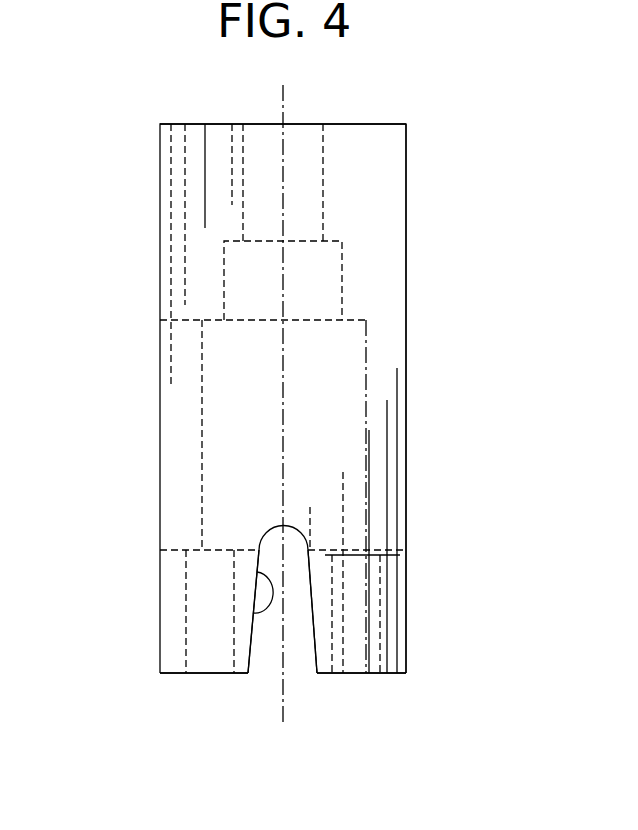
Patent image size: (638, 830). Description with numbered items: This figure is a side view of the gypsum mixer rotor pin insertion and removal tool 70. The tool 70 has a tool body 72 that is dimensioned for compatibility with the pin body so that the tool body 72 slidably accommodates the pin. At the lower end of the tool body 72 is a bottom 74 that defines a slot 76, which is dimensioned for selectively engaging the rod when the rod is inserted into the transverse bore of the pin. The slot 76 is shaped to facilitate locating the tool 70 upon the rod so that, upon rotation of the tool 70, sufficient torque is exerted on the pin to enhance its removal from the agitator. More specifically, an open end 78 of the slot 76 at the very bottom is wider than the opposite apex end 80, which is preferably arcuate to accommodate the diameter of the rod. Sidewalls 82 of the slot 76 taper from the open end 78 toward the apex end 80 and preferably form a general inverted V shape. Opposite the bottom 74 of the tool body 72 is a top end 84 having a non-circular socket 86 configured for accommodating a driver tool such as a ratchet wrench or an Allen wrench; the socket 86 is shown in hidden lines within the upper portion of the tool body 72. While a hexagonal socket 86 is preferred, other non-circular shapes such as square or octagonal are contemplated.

The gypsum mixer rotor pin insertion and removal tool 70 is at (442, 239).
The tool body 72 is at (406, 455).
The bottom 74 is at (380, 673).
The slot 76 is at (270, 663).
The open end 78 is at (317, 662).
The apex end 80 is at (298, 533).
The sidewalls 82 is at (314, 613).
The top end 84 is at (379, 123).
The non-circular socket 86 is at (243, 182).